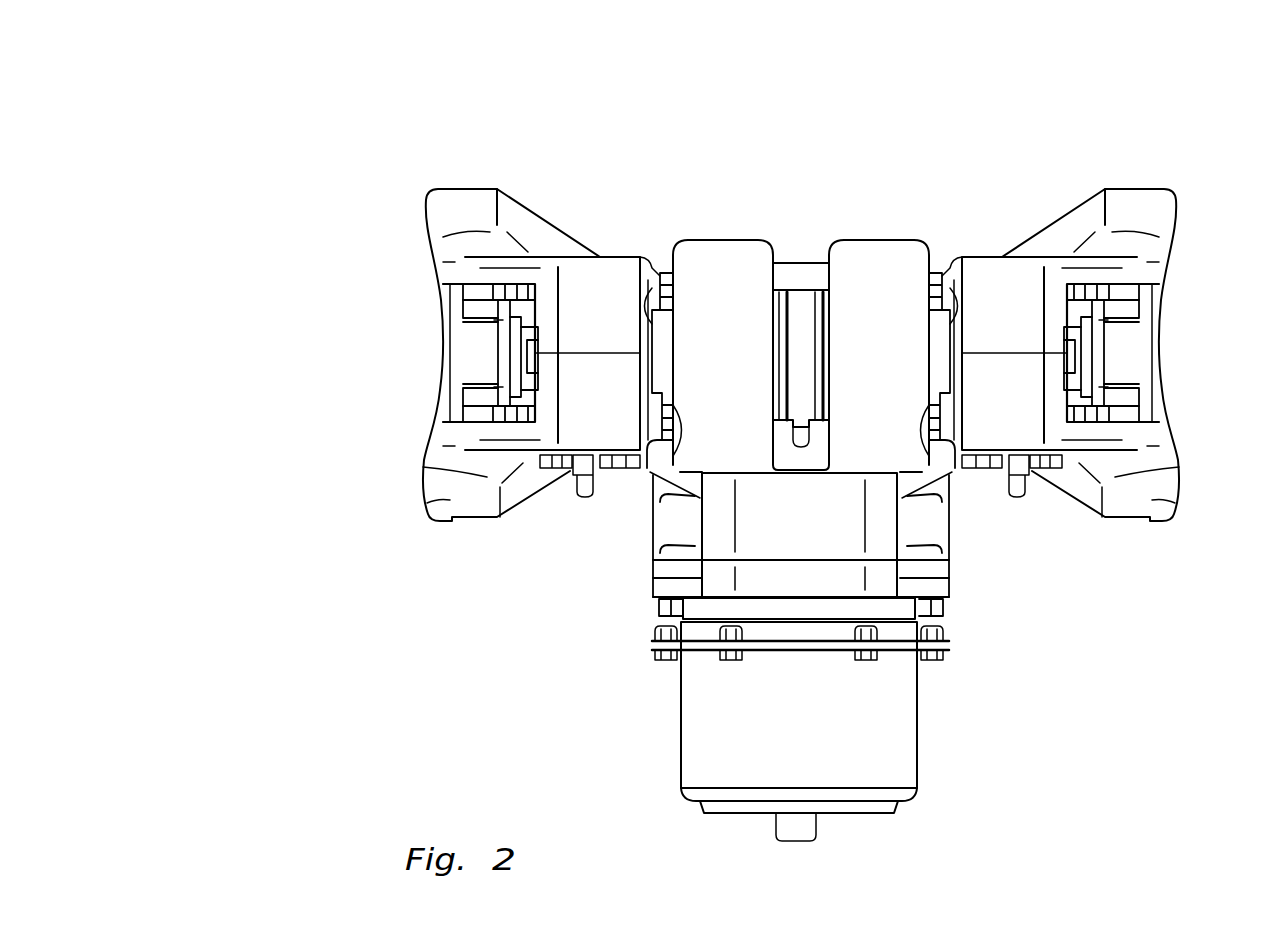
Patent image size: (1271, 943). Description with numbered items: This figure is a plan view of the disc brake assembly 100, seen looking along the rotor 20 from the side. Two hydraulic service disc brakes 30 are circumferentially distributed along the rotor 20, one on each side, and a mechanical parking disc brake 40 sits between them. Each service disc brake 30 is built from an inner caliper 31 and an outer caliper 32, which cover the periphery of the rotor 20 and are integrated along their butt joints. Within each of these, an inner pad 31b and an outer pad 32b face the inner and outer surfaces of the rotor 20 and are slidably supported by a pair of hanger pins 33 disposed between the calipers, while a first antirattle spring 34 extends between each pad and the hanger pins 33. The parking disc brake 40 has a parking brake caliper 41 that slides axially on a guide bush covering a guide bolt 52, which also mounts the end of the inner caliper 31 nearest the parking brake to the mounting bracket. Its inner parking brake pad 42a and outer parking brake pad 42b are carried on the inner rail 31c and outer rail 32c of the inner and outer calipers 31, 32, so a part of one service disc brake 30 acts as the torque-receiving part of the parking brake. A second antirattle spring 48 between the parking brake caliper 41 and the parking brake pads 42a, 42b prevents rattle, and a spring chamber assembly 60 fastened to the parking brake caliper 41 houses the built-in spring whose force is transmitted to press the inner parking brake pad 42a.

The disc brake assembly 100 is at (620, 86).
The rotor 20 is at (947, 352).
The hydraulic service disc brake 30 is at (478, 186).
The inner caliper 31 is at (450, 502).
The inner pad 31b is at (475, 415).
The inner rail 31c is at (634, 476).
The outer caliper 32 is at (615, 290).
The outer pad 32b is at (470, 298).
The outer rail 32c is at (662, 278).
The hanger pin 33 is at (508, 365).
The first antirattle spring 34 is at (465, 350).
The mechanical parking disc brake 40 is at (801, 356).
The parking brake caliper 41 is at (740, 262).
The inner parking brake pad 42a is at (958, 465).
The outer parking brake pad 42b is at (948, 330).
The second antirattle spring 48 is at (798, 308).
The guide bolt 52 is at (659, 606).
The spring chamber assembly 60 is at (916, 732).